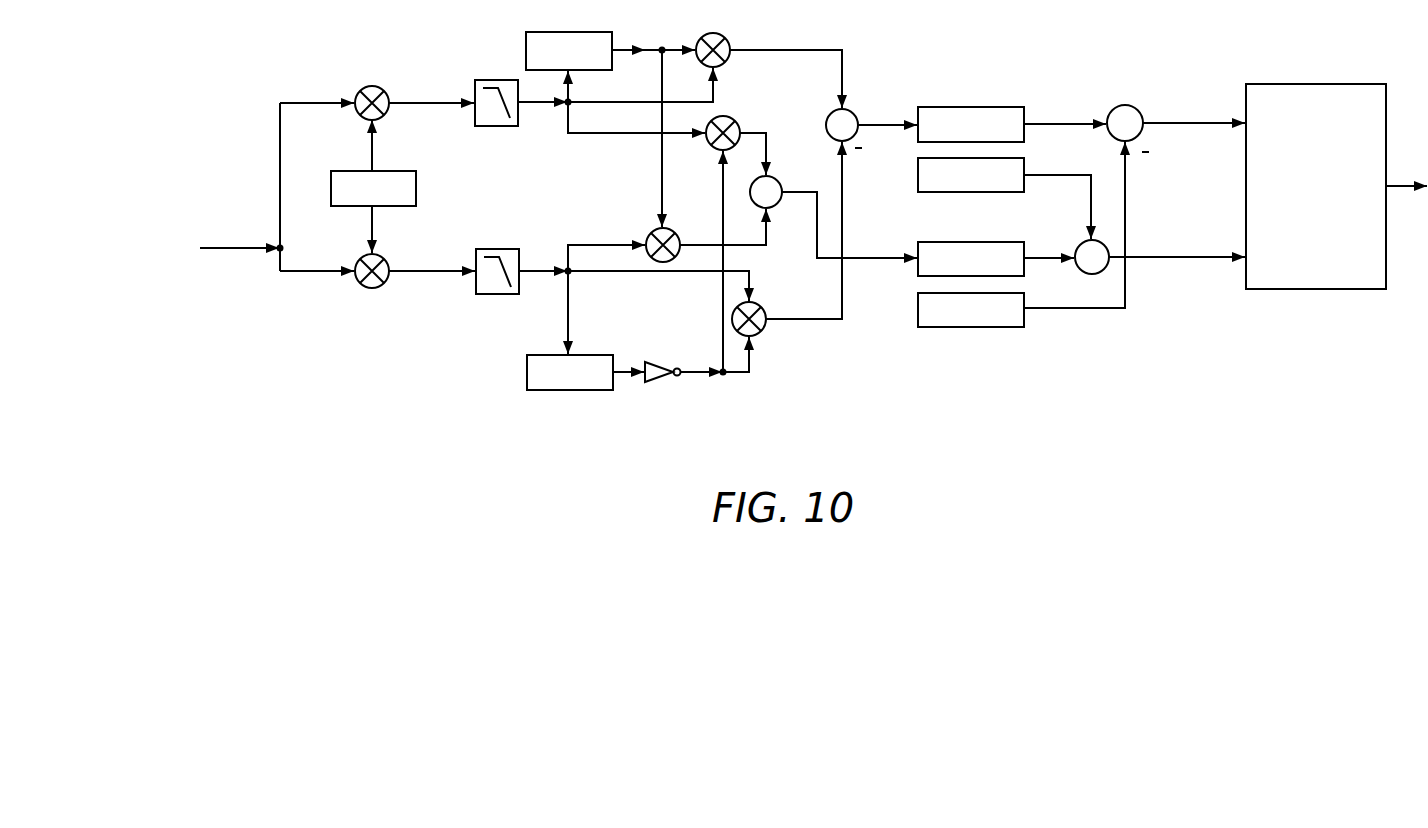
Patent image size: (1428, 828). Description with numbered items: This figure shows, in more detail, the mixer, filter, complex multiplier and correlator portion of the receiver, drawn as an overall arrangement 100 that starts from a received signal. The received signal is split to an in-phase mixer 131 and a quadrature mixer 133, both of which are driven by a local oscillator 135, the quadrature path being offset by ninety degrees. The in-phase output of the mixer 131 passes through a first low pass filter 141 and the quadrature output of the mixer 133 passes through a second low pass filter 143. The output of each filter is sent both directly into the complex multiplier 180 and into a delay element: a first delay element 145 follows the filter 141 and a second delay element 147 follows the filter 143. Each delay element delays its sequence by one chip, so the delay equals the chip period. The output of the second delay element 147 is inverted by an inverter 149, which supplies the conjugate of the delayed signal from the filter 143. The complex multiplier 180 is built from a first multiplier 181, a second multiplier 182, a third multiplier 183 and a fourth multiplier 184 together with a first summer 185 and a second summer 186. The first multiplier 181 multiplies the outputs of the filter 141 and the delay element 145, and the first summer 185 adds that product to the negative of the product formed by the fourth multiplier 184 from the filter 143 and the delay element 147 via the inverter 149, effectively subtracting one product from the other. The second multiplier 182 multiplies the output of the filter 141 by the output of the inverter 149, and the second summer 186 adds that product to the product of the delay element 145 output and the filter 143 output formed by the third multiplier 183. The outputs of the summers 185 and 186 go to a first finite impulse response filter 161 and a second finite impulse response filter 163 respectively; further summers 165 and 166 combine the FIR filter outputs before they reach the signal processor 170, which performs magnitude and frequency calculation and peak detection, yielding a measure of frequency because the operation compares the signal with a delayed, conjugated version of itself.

The receiver system 100 is at (214, 172).
The in-phase mixer 131 is at (384, 115).
The quadrature mixer 133 is at (372, 288).
The local oscillator 135 is at (416, 188).
The first low pass filter 141 is at (492, 128).
The second low pass filter 143 is at (497, 248).
The first delay element 145 is at (565, 32).
The second delay element 147 is at (545, 390).
The inverter 149 is at (660, 378).
The complex multiplier 180 is at (862, 49).
The first multiplier 181 is at (713, 32).
The second multiplier 182 is at (711, 148).
The third multiplier 183 is at (655, 231).
The fourth multiplier 184 is at (763, 306).
The first summer 185 is at (826, 125).
The second summer 186 is at (777, 180).
The first finite impulse response filter 161 is at (968, 107).
The second finite impulse response filter 163 is at (962, 241).
The summer 165 is at (1122, 106).
The summer 166 is at (1094, 274).
The signal processor 170 is at (1313, 84).